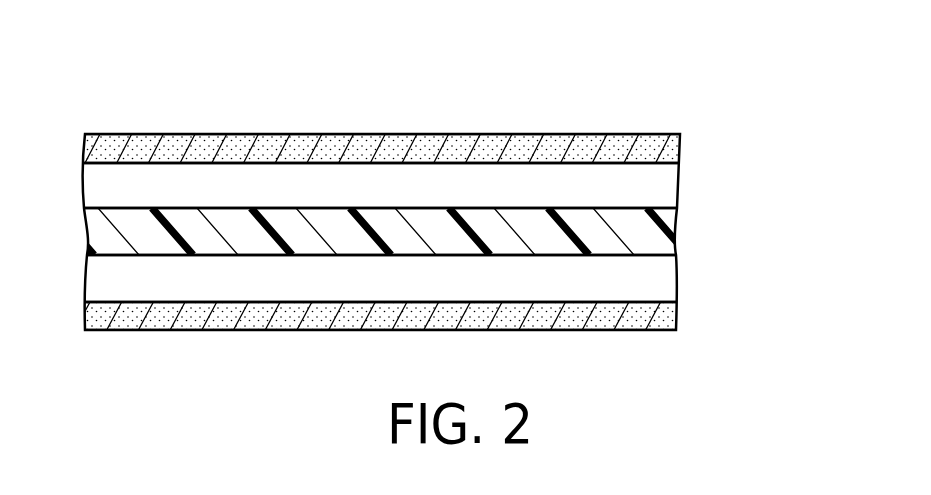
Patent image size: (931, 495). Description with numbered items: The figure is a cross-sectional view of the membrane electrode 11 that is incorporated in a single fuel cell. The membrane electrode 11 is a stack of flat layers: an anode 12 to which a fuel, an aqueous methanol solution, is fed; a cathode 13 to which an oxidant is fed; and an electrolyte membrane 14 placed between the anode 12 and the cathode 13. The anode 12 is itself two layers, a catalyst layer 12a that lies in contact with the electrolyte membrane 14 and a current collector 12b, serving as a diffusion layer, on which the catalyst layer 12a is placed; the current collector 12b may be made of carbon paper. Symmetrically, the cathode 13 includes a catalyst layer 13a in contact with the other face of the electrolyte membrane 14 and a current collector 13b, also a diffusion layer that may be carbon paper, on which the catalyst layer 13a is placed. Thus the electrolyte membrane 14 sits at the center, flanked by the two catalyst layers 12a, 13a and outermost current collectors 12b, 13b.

The membrane electrode 11 is at (632, 118).
The anode 12 is at (765, 123).
The catalyst layer 12a is at (662, 183).
The current collector 12b is at (678, 152).
The cathode 13 is at (765, 255).
The catalyst layer 13a is at (662, 277).
The current collector 13b is at (668, 317).
The electrolyte membrane 14 is at (672, 235).